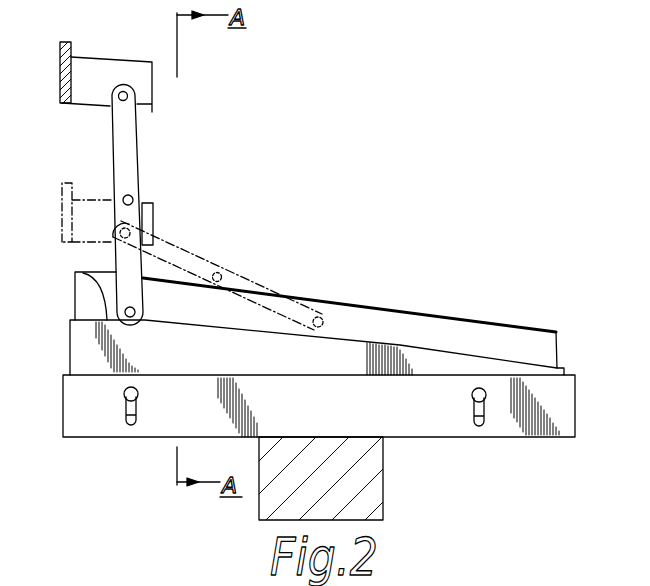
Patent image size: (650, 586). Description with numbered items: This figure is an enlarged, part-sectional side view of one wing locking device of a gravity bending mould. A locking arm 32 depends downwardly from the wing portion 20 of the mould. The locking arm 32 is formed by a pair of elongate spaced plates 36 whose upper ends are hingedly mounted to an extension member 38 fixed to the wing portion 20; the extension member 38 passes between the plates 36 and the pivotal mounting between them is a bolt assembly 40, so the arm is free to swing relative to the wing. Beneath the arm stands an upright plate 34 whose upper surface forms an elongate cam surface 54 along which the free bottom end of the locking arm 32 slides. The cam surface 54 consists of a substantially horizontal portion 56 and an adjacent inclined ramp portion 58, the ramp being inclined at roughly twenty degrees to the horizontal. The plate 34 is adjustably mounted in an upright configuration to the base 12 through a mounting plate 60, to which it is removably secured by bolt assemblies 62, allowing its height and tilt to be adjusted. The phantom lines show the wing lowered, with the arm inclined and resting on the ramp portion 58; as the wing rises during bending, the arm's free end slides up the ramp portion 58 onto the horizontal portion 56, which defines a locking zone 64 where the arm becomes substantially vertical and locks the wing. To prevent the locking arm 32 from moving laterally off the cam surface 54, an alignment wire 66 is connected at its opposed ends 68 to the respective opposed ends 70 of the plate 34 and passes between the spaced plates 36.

The base 12 is at (363, 505).
The wing portion 20 is at (62, 58).
The locking arm 32 is at (139, 152).
The plate 34 is at (85, 351).
The elongate spaced plates 36 is at (139, 125).
The extension member 38 is at (146, 72).
The bolt assembly 40 is at (128, 96).
The cam surface 54 is at (75, 303).
The substantially horizontal portion 56 is at (173, 320).
The inclined ramp portion 58 is at (380, 345).
The mounting plate 60 is at (558, 405).
The bolt assemblies 62 is at (128, 395).
The locking zone 64 is at (83, 272).
The wire 66 is at (502, 323).
The opposed ends of the wire 68 is at (75, 311).
The opposed ends of the plate 70 is at (70, 330).